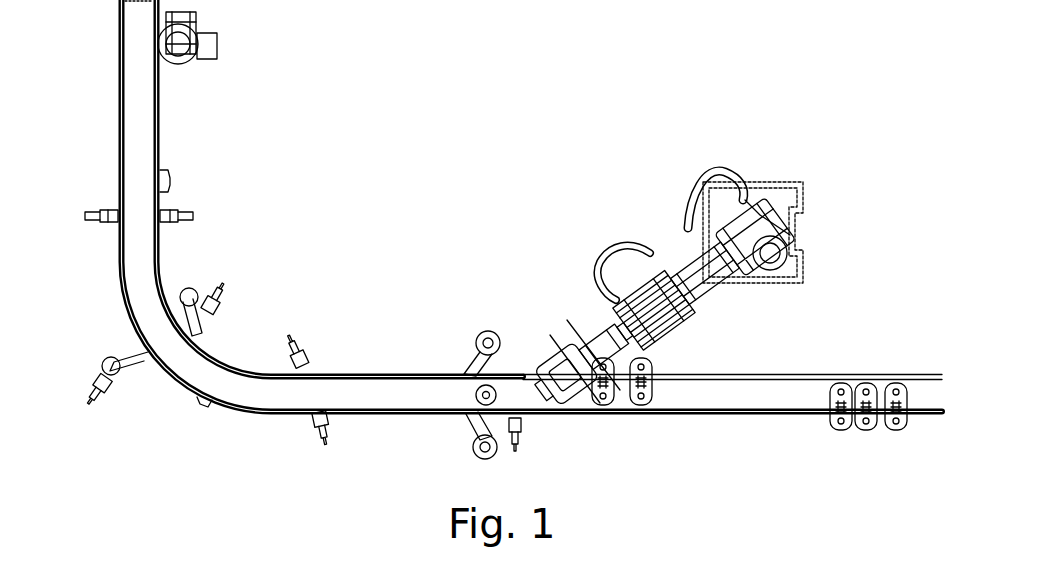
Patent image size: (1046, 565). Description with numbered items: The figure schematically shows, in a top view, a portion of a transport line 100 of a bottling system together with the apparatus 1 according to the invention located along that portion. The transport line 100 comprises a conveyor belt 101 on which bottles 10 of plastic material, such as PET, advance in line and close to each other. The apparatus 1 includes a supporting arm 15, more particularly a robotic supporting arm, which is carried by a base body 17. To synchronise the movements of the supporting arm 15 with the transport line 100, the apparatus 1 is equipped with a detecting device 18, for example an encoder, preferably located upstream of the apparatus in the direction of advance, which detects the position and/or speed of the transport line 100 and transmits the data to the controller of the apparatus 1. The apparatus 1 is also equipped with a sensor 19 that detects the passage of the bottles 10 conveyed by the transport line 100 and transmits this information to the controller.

The apparatus 1 is at (826, 156).
The bottles 10 is at (476, 396).
The supporting arm 15 is at (606, 340).
The base body 17 is at (803, 236).
The detecting device 18 is at (218, 47).
The sensor 19 is at (503, 335).
The transport line 100 is at (198, 163).
The conveyor belt 101 is at (143, 304).